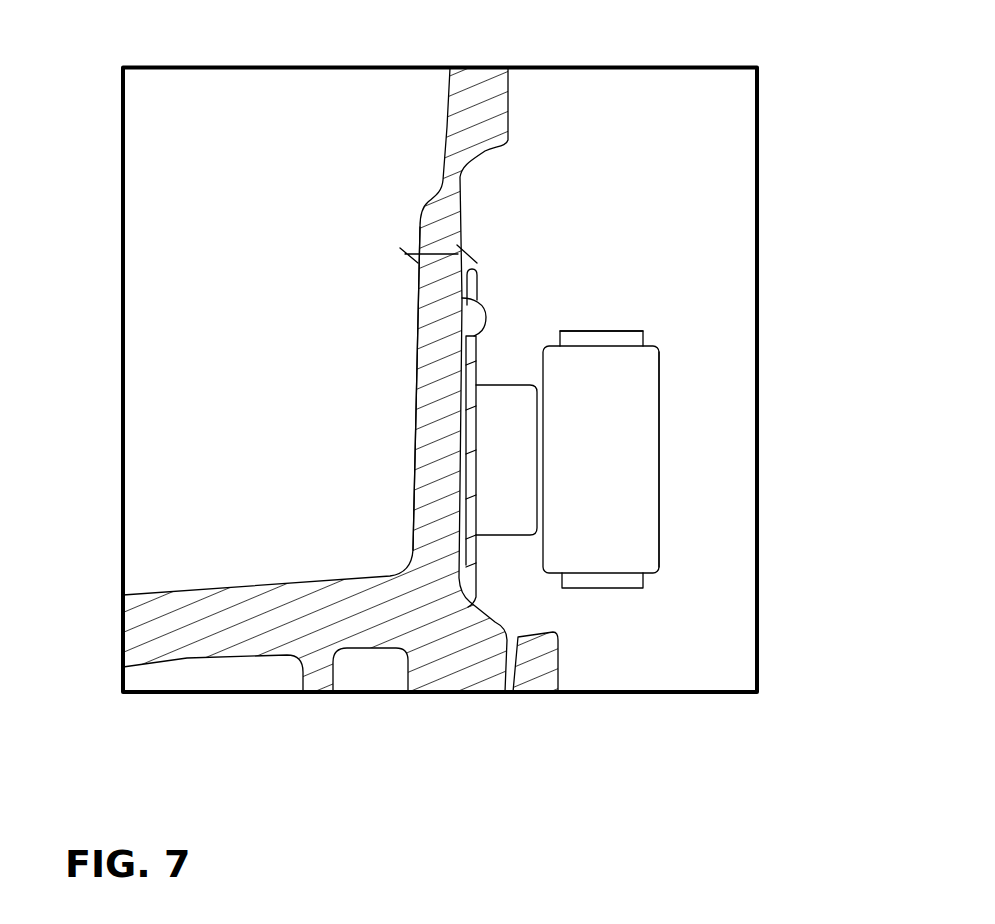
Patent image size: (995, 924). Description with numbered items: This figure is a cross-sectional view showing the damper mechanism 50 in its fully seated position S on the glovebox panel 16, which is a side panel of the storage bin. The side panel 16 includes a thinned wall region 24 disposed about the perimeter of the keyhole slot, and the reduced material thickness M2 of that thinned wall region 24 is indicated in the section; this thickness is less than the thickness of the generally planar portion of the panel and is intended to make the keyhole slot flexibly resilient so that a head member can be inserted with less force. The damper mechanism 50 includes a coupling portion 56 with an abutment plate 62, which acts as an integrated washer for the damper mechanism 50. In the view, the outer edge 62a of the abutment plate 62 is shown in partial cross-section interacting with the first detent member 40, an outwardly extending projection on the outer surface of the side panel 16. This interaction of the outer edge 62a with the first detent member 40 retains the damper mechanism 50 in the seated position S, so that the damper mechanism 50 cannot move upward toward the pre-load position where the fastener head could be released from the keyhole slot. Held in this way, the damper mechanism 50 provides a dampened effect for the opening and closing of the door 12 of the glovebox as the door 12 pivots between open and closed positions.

The glovebox panel 16 is at (522, 98).
The thinned wall region 24 is at (420, 377).
The material thickness M2 is at (430, 252).
The outer edge 62a is at (479, 290).
The first detent member 40 is at (484, 318).
The abutment plate 62 is at (478, 495).
The damper mechanism 50 is at (633, 442).
The seated position S is at (664, 403).
The coupling portion 56 is at (664, 462).
The door 12 is at (574, 656).